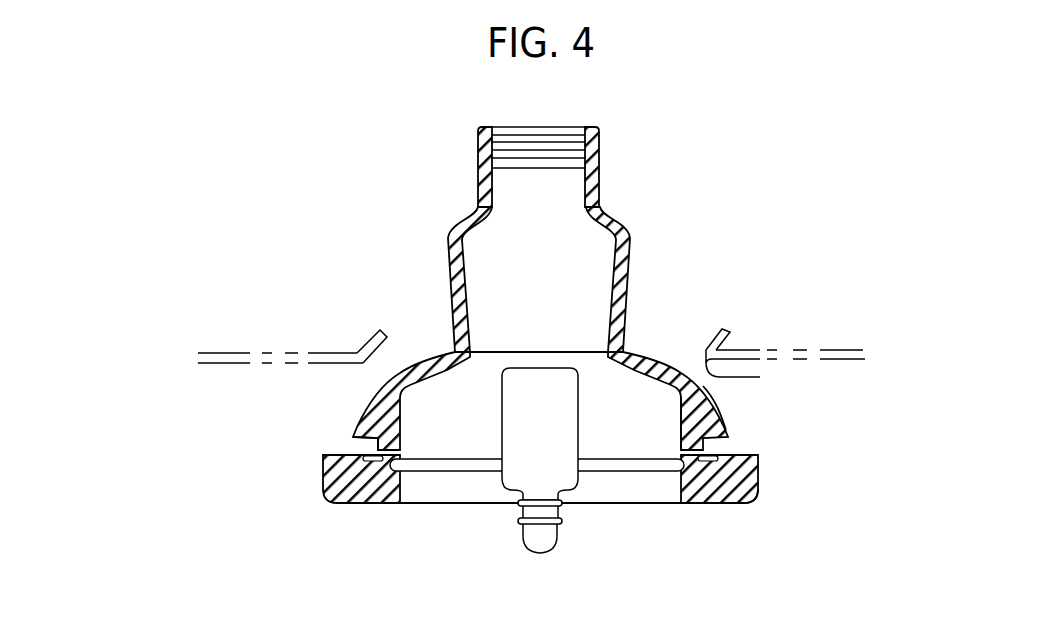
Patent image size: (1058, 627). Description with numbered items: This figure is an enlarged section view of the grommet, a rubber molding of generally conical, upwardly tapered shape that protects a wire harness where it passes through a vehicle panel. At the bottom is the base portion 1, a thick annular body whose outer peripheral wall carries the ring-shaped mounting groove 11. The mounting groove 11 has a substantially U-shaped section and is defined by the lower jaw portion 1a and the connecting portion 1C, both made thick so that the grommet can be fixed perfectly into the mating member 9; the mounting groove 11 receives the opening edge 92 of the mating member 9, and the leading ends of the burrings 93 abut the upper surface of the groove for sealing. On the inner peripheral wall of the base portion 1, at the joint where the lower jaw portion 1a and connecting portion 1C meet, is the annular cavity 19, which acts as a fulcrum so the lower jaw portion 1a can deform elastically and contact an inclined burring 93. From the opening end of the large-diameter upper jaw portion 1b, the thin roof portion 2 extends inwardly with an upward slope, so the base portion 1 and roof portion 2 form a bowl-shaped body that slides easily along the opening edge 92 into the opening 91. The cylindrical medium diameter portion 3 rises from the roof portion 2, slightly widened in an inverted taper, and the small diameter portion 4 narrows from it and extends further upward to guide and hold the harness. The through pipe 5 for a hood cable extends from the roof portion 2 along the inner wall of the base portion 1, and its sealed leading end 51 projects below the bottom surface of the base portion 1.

The base portion 1 is at (330, 492).
The lower jaw portion 1a is at (731, 498).
The upper jaw portion 1b is at (723, 410).
The connecting portion 1C is at (681, 418).
The roof portion 2 is at (673, 363).
The medium diameter portion 3 is at (449, 275).
The small diameter portion 4 is at (599, 152).
The through pipe 5 is at (518, 442).
The nozzle tip 51 is at (530, 555).
The mating member 9 is at (232, 350).
The opening 91 is at (405, 326).
The opening edge 92 is at (750, 370).
The burring 93 is at (713, 327).
The mounting groove 11 is at (350, 448).
The annular cavity 19 is at (660, 471).